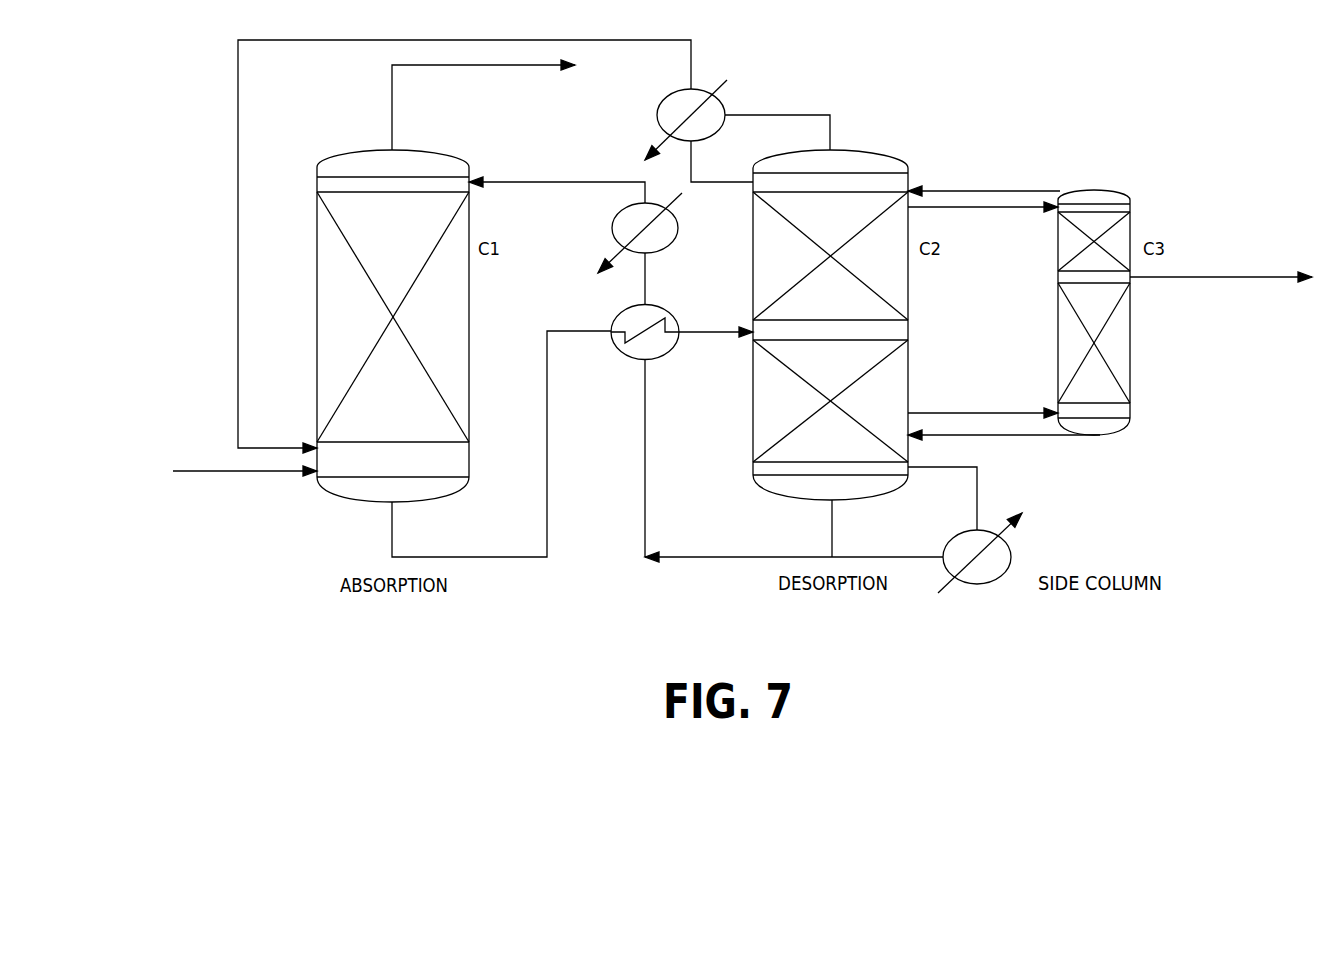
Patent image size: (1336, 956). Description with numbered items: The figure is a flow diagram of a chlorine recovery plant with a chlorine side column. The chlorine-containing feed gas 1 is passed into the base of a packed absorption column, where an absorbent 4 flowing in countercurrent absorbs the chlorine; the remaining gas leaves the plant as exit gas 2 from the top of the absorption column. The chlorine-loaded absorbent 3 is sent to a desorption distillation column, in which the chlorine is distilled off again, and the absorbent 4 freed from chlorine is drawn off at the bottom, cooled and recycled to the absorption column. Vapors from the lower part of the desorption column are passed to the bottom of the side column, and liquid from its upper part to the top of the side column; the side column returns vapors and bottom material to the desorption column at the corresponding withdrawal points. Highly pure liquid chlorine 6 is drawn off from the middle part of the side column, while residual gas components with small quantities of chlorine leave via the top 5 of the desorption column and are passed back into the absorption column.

The feed gas 1 is at (220, 481).
The exit gas 2 is at (483, 105).
The chlorine-loaded absorbent 3 is at (501, 444).
The absorbent 4 is at (706, 369).
The top of desorption distillation column 5 is at (513, 246).
The liquid chlorine 6 is at (1221, 282).